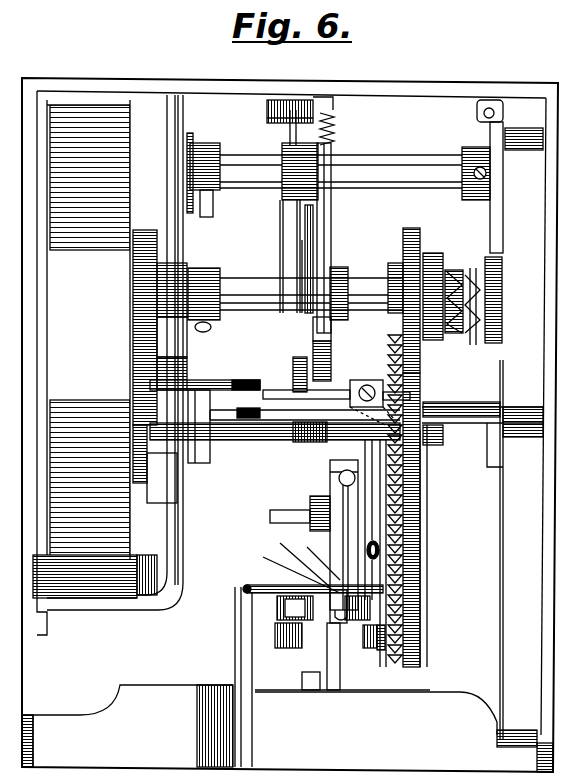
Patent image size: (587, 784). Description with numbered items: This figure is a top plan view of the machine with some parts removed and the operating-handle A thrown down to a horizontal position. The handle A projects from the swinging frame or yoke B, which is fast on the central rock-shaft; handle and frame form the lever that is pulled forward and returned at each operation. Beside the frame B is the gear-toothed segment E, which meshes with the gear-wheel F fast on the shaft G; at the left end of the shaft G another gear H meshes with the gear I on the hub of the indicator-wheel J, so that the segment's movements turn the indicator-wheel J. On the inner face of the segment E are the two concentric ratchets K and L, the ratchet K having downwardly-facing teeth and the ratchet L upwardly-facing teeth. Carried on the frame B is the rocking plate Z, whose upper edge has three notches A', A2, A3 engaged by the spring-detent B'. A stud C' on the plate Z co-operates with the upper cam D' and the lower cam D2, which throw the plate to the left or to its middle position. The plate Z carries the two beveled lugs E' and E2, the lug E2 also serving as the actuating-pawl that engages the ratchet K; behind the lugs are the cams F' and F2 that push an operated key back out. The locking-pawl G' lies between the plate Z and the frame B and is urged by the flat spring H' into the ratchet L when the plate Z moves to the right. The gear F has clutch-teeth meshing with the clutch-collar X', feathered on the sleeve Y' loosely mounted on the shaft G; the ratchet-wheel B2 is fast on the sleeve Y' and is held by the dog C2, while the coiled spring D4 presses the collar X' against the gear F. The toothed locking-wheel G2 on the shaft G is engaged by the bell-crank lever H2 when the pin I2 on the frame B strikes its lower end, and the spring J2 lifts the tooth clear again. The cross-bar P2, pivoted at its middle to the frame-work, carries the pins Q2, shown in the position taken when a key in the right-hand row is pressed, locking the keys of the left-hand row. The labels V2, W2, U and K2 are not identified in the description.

The indicator-wheel J is at (133, 152).
The gear H is at (155, 353).
The gear I is at (185, 368).
The shaft G is at (295, 294).
The bell-crank lever H2 is at (286, 224).
The spring J2 is at (334, 134).
The rod V2 is at (310, 258).
The gear-wheel F is at (401, 288).
The gear-toothed segment E is at (428, 520).
The ratchet K is at (422, 560).
The ratchet L is at (420, 582).
The locking-pawl G' is at (419, 553).
The clutch-collar X' is at (433, 274).
The coiled spring D4 is at (447, 253).
The sleeve Y' is at (458, 316).
The holding-dog C2 is at (503, 228).
The ratchet-wheel B2 is at (502, 290).
The block W2 is at (293, 358).
The toothed locking-wheel G2 is at (332, 343).
The cross-bar P2 is at (303, 388).
The cam or trip D' is at (381, 415).
The pin Q2 is at (317, 441).
The pin I2 is at (277, 507).
The spring-detent B' is at (327, 540).
The ring U is at (423, 497).
The swinging frame or yoke B is at (291, 566).
The flat spring H' is at (227, 599).
The notch A' is at (291, 569).
The notch A2 is at (298, 560).
The notch A3 is at (314, 558).
The operating-handle A is at (225, 677).
The rocking plate or frame Z is at (277, 597).
The cam F' is at (285, 640).
The lug E' is at (297, 642).
The cam or trip D2 is at (296, 676).
The stud C' is at (327, 653).
The cam F2 is at (372, 650).
The lug E2 is at (380, 660).
The housing K2 is at (118, 598).